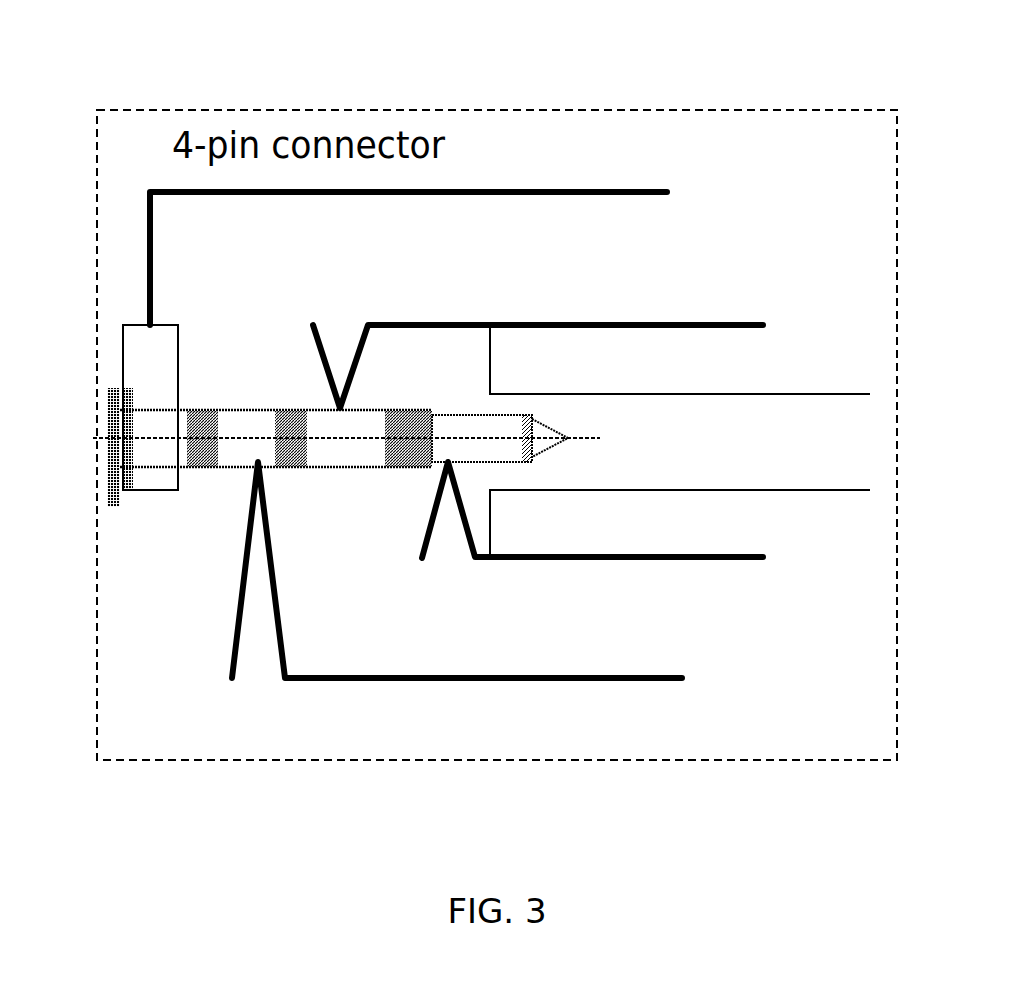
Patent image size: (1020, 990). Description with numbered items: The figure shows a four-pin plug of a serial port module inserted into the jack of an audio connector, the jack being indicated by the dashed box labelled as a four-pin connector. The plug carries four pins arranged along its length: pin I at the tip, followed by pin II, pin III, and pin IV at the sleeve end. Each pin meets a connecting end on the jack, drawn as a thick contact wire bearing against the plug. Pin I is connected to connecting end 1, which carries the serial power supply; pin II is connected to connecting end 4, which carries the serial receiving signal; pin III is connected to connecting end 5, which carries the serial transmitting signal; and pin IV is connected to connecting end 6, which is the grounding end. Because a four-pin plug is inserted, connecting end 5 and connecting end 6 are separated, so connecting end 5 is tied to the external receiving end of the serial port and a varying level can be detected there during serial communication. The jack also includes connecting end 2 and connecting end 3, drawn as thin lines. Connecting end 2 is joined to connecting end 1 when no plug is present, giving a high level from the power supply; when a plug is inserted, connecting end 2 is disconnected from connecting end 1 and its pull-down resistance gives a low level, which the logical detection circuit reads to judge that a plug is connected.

The connecting end 1 is at (763, 813).
The connecting end 2 is at (680, 501).
The connecting end 3 is at (680, 361).
The connecting end 4 is at (762, 325).
The connecting end 5 is at (680, 813).
The connecting end 6 is at (667, 192).
The pin I is at (500, 412).
The pin II is at (386, 474).
The pin III is at (247, 403).
The pin IV is at (160, 438).